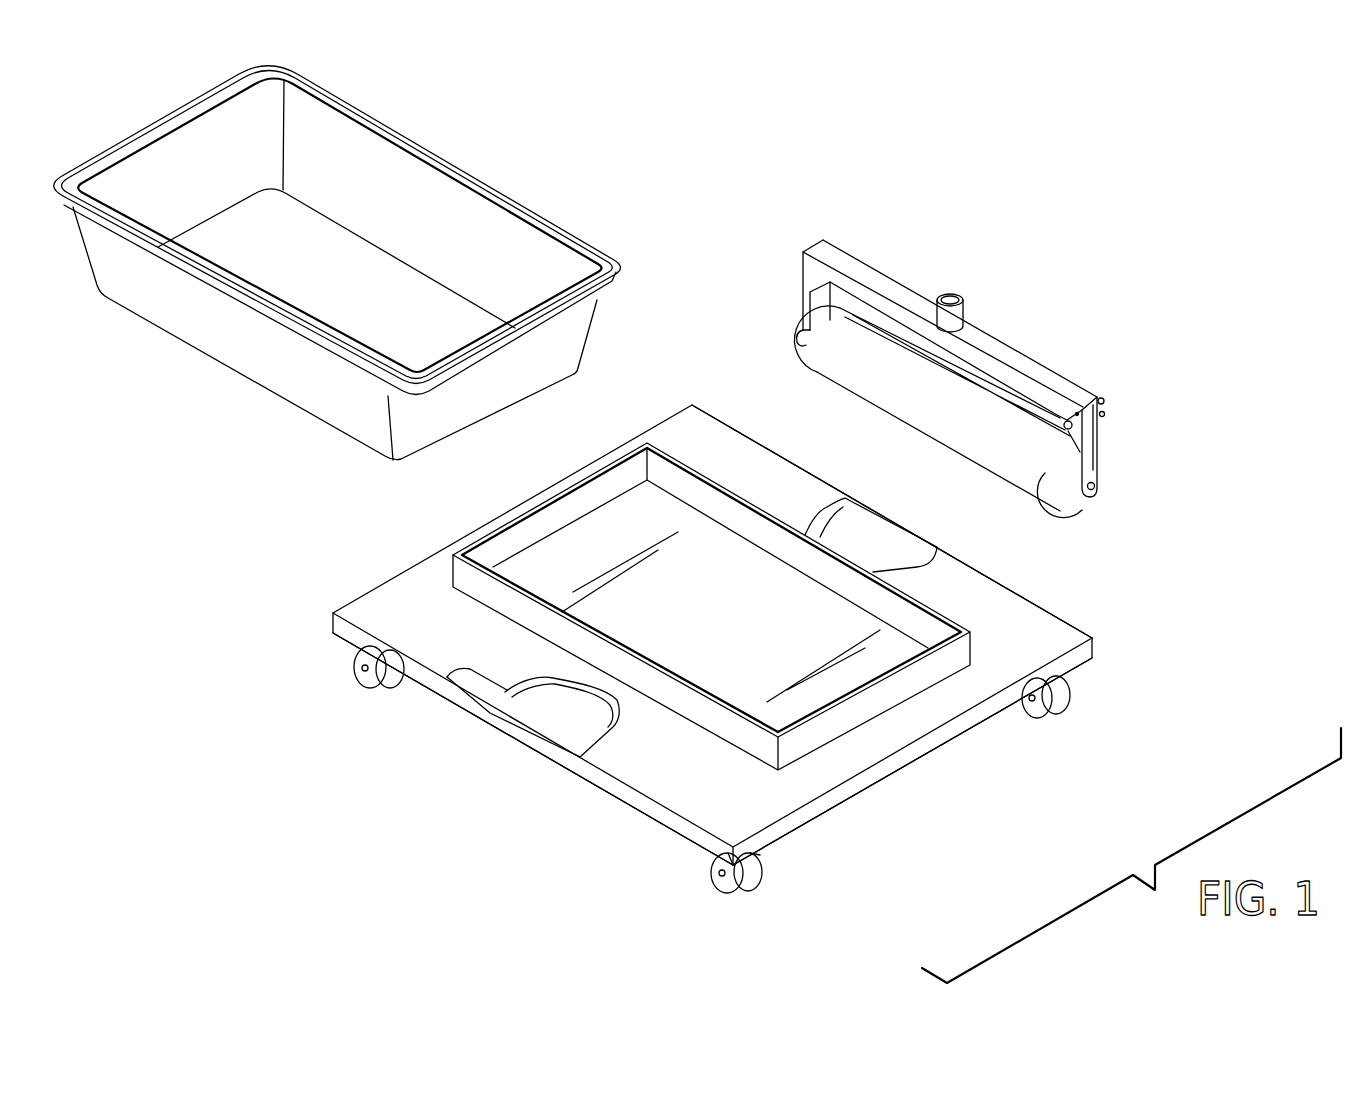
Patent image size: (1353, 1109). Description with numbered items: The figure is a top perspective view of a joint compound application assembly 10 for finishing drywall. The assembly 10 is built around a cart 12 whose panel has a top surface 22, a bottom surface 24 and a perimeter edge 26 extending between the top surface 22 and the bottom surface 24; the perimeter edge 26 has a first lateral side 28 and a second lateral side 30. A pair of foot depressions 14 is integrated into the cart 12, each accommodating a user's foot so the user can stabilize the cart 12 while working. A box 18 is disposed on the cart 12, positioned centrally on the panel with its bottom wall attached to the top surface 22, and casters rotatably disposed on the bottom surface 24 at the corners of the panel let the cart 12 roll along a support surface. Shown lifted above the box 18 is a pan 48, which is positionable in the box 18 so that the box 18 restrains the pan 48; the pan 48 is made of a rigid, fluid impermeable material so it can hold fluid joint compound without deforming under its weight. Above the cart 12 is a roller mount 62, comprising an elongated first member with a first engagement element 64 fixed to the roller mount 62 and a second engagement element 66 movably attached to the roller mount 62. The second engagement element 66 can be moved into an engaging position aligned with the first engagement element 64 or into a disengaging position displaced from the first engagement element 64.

The joint compound application assembly 10 is at (1088, 198).
The cart 12 is at (1115, 632).
The foot depressions 14 is at (538, 709).
The box 18 is at (972, 648).
The top surface 22 is at (1030, 625).
The bottom surface 24 is at (916, 753).
The perimeter edge 26 is at (668, 830).
The first lateral side 28 is at (1008, 570).
The second lateral side 30 is at (617, 802).
The pan 48 is at (198, 378).
The roller mount 62 is at (1103, 390).
The first engagement element 64 is at (802, 293).
The second engagement element 66 is at (1100, 465).